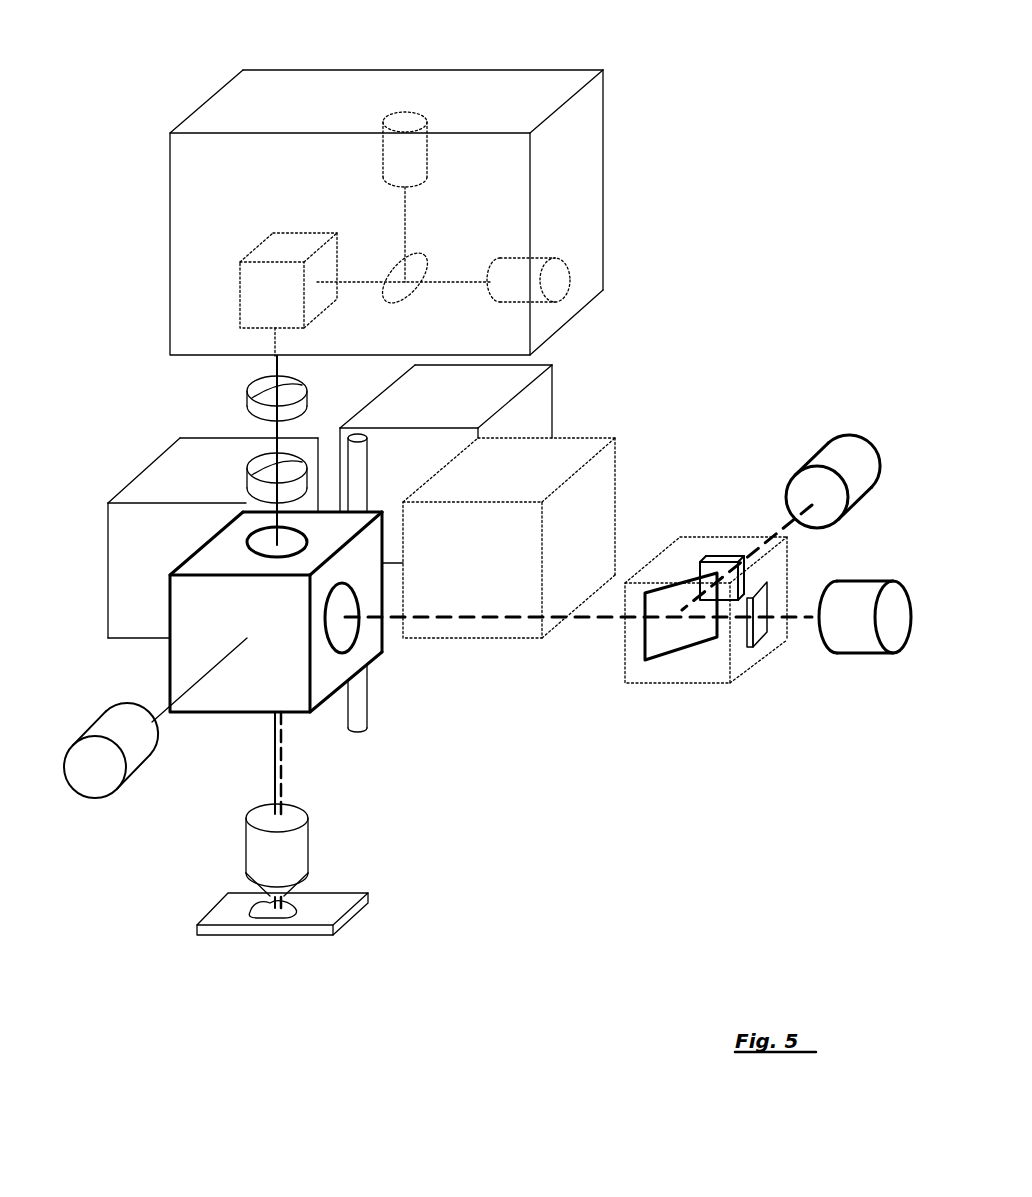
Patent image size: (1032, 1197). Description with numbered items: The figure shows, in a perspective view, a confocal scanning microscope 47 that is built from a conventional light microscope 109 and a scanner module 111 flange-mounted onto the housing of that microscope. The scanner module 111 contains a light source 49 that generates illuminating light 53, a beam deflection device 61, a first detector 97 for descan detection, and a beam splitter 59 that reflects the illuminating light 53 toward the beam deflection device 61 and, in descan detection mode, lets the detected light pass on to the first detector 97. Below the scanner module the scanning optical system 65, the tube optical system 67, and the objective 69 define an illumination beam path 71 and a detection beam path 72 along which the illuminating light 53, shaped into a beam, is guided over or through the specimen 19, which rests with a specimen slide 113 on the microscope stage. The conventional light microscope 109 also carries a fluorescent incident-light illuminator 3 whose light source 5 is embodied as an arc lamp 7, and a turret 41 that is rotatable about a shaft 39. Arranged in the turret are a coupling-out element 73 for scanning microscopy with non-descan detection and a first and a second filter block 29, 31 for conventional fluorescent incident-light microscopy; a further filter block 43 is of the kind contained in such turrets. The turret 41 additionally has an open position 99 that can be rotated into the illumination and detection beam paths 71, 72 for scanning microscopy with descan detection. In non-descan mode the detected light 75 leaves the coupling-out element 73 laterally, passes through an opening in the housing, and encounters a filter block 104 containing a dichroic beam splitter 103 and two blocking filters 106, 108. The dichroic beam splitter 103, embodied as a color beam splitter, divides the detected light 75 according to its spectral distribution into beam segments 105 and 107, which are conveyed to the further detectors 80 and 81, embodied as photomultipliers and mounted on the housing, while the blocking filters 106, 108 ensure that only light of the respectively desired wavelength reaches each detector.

The fluorescent incident-light illuminator 3 is at (113, 686).
The light source 5 is at (140, 797).
The arc lamp 7 is at (98, 785).
The specimen 19 is at (267, 910).
The first filter block 29 is at (520, 375).
The second filter block 31 is at (182, 450).
The shaft 39 is at (357, 720).
The turret 41 is at (448, 660).
The filter block 43 is at (283, 363).
The confocal scanning microscope 47 is at (733, 130).
The light source 49 is at (360, 165).
The illuminating light 53 is at (405, 218).
The beam splitter 59 is at (405, 290).
The beam deflection device 61 is at (277, 250).
The scanning optical system 65 is at (257, 398).
The tube optical system 67 is at (260, 470).
The objective 69 is at (287, 858).
The illumination beam path 71 is at (273, 748).
The detection beam path 72 is at (283, 765).
The coupling-out element 73 is at (190, 607).
The detected light 75 is at (508, 617).
The detector 80 is at (838, 637).
The detector 81 is at (828, 480).
The first detector 97 is at (521, 270).
The open position 99 is at (563, 458).
The dichroic beam splitter 103 is at (647, 643).
The filter block 104 is at (693, 680).
The beam segment 105 is at (792, 522).
The blocking filter 106 is at (720, 577).
The beam segment 107 is at (808, 623).
The blocking filter 108 is at (753, 627).
The conventional light microscope 109 is at (617, 848).
The scanner module 111 is at (520, 90).
The specimen slide 113 is at (330, 902).